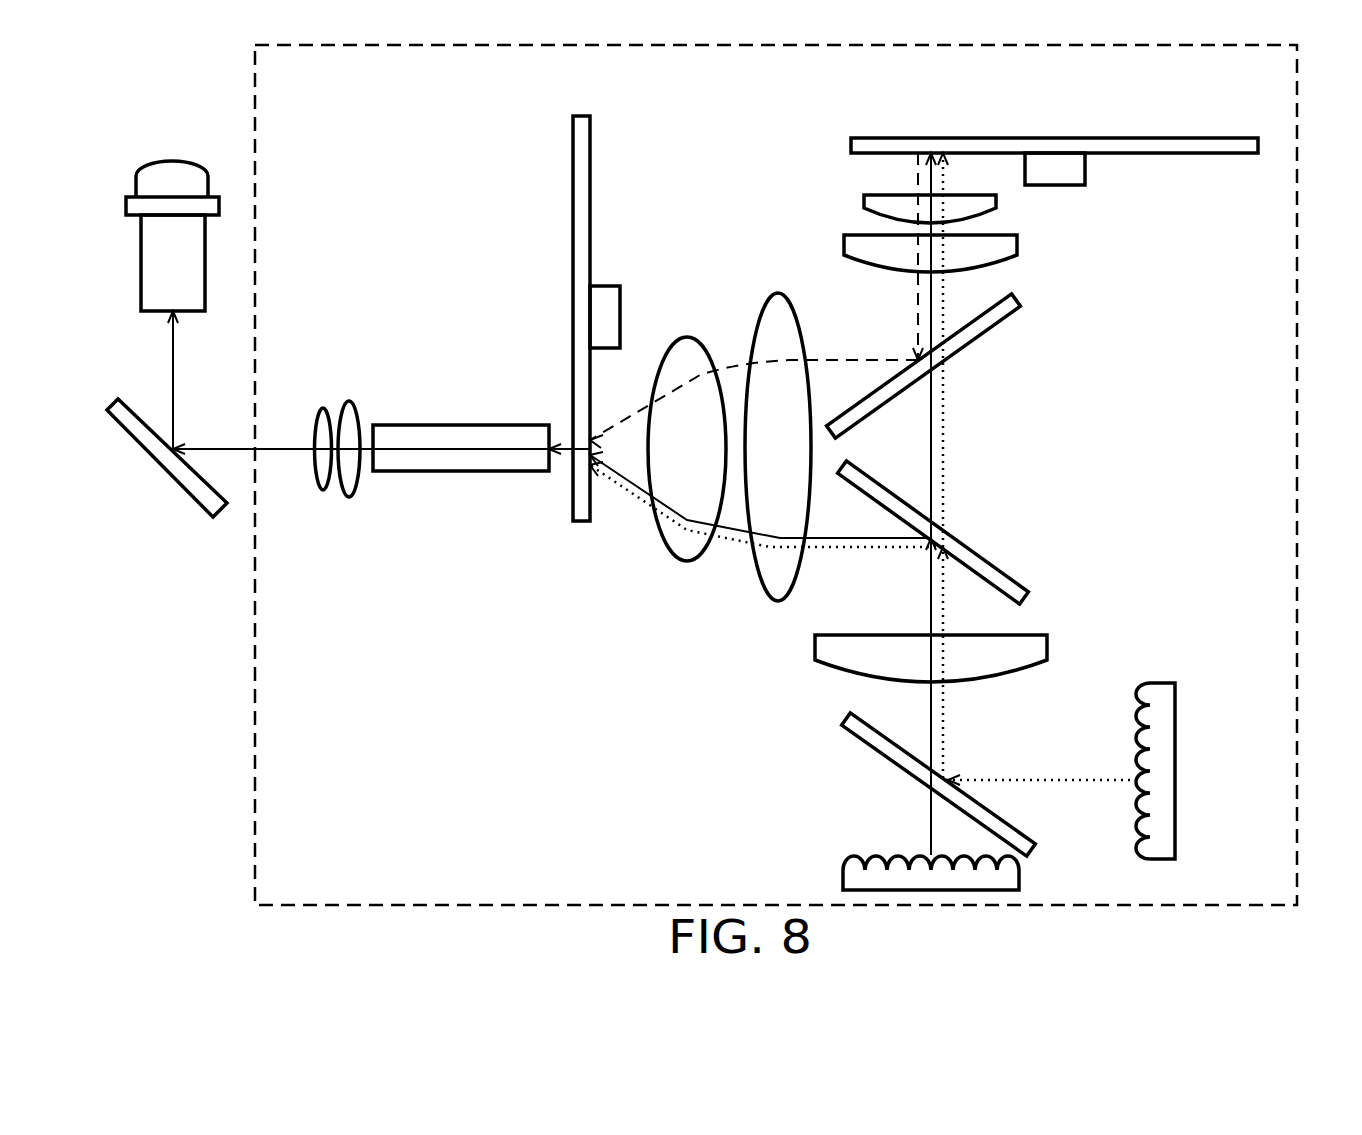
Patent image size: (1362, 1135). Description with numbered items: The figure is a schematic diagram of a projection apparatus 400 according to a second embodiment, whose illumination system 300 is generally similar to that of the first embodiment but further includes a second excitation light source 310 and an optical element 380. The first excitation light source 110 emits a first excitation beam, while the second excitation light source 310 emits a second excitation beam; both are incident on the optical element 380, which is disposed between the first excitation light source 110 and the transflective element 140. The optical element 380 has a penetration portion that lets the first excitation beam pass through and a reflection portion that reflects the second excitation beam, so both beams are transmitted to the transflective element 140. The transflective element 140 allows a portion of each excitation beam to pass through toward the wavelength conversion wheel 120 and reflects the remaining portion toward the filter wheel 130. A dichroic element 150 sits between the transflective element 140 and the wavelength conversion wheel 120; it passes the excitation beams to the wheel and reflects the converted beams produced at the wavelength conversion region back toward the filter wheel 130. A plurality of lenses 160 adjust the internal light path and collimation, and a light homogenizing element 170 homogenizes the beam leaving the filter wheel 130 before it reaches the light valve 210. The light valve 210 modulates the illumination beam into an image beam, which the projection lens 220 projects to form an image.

The first excitation light source 110 is at (852, 876).
The wavelength conversion wheel 120 is at (1192, 142).
The filter wheel 130 is at (582, 118).
The transflective element 140 is at (1026, 596).
The dichroic element 150 is at (1008, 320).
The lenses 160 is at (323, 412).
The light homogenizing element 170 is at (460, 471).
The light valve 210 is at (188, 480).
The projection lens 220 is at (170, 173).
The illumination system 300 is at (255, 808).
The second excitation light source 310 is at (1173, 764).
The optical element 380 is at (1032, 848).
The projection apparatus 400 is at (1350, 920).